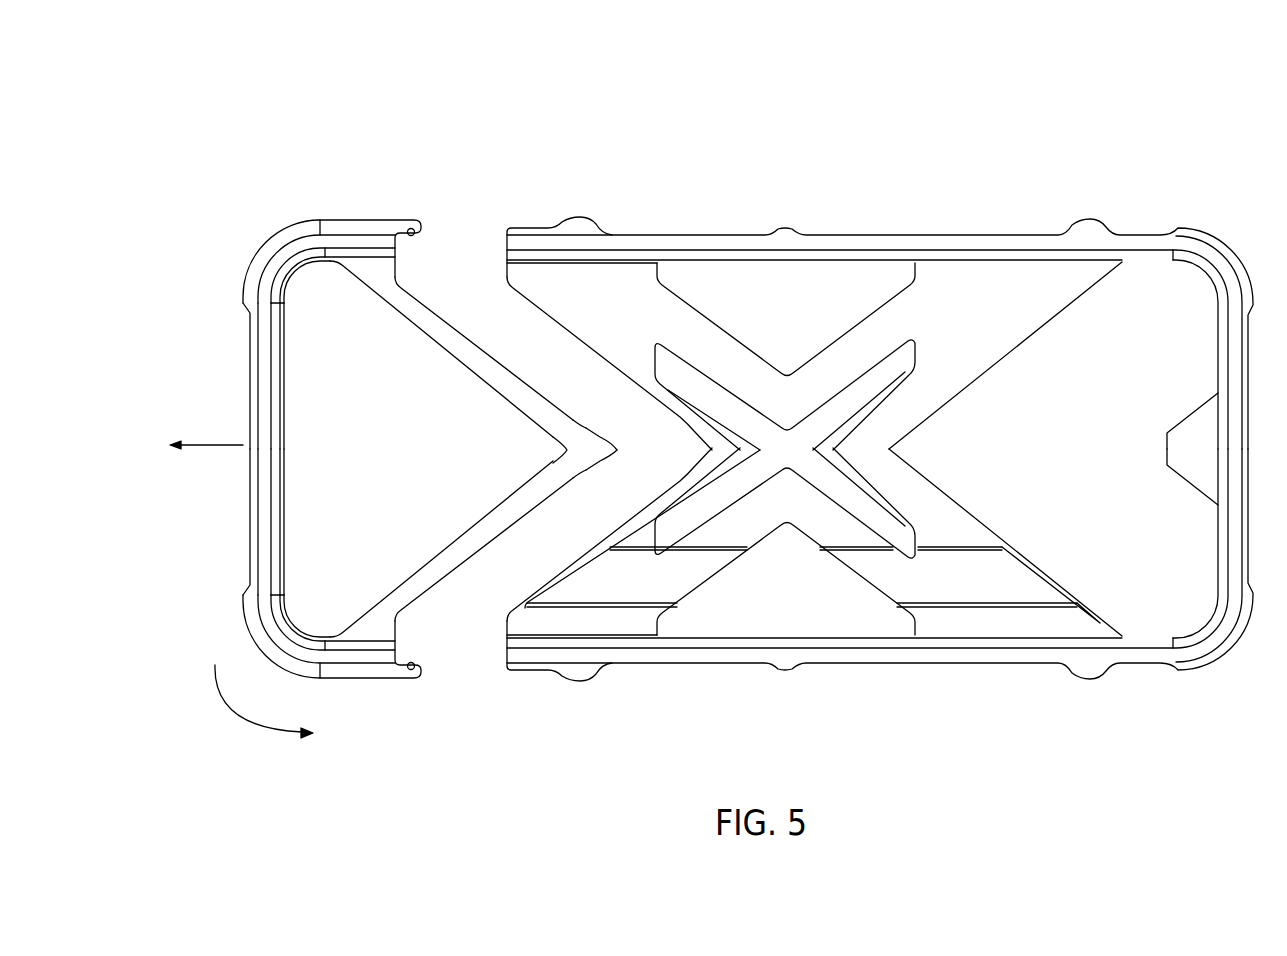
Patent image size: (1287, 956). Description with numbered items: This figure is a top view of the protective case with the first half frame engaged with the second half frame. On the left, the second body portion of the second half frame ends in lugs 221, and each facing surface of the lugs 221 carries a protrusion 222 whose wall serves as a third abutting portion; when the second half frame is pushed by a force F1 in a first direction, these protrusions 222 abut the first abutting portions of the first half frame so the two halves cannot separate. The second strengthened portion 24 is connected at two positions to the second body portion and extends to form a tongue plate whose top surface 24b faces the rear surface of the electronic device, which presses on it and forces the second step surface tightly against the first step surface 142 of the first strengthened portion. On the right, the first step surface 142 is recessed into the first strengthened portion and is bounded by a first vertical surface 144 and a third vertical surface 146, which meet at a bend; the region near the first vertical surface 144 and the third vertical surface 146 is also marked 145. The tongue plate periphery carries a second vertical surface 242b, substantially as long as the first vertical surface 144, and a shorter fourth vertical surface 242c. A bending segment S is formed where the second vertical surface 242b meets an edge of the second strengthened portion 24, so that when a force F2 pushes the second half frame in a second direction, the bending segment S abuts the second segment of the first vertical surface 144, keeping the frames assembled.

The lug 221 is at (410, 218).
The protrusion 222 is at (422, 232).
The second strengthened portion 24 is at (463, 332).
The bending segment S is at (578, 420).
The second vertical surface 242b is at (603, 430).
The fourth vertical surface 242c is at (603, 470).
The top surface of the tongue plate 24b is at (588, 447).
The guide rail 145 is at (683, 417).
The first vertical surface 144 is at (720, 433).
The first step surface 142 is at (722, 452).
The third vertical surface 146 is at (682, 492).
The force in a first direction F1 is at (190, 445).
The force in a second direction F2 is at (264, 715).